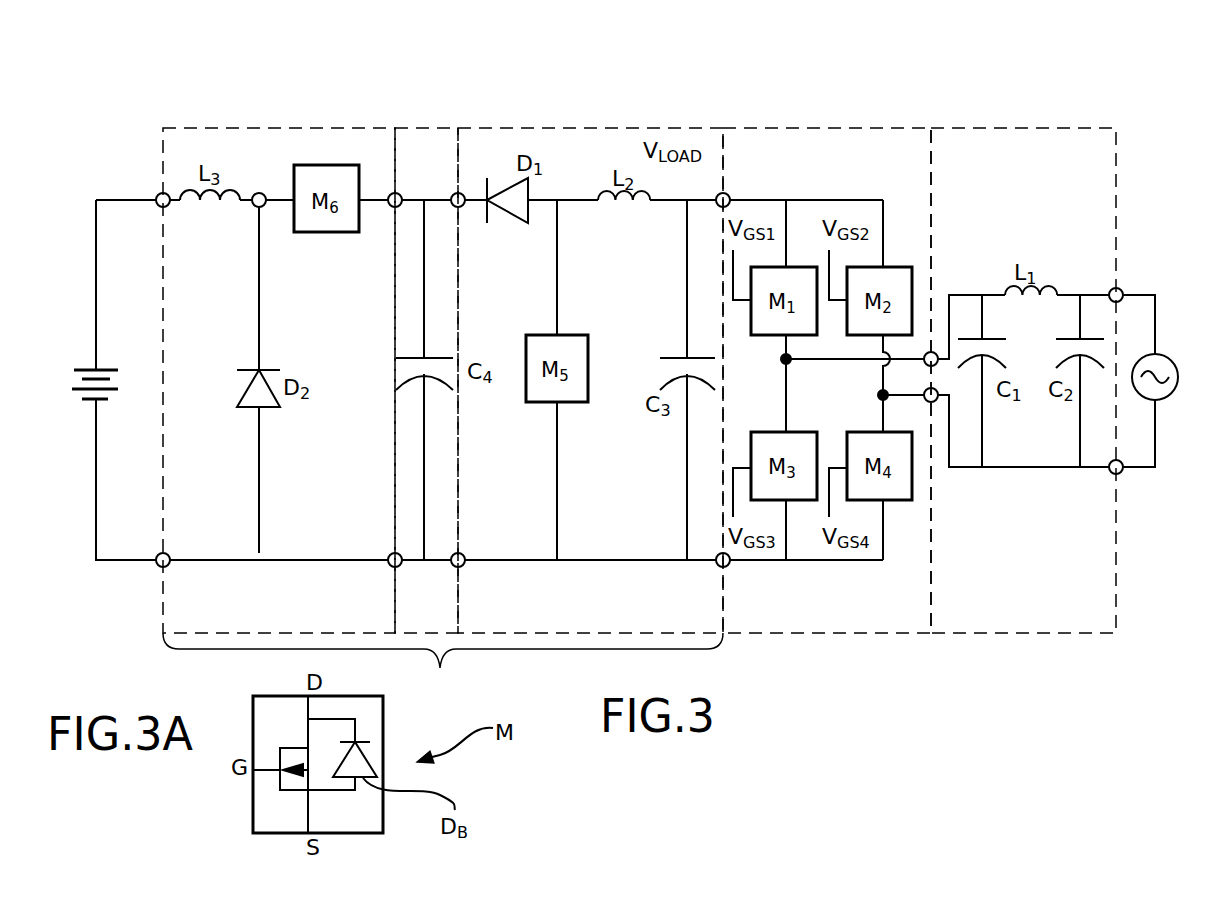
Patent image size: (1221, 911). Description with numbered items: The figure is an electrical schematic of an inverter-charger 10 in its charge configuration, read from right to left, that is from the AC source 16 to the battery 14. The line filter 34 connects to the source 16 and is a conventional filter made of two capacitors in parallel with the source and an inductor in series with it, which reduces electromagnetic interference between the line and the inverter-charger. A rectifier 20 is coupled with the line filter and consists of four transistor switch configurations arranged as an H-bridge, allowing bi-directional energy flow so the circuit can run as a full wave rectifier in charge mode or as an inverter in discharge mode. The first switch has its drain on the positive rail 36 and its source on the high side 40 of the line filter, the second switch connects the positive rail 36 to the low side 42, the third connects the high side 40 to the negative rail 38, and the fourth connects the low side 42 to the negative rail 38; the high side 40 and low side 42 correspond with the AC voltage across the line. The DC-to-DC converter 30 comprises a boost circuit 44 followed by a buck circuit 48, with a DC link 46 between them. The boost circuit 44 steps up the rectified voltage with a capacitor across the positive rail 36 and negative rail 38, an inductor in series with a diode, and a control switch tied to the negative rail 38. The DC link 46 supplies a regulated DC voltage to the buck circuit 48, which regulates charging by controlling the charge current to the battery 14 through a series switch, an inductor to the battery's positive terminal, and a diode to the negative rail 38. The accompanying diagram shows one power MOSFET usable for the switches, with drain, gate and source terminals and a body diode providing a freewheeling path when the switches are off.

The inverter-charger 10 is at (688, 90).
The battery 14 is at (51, 363).
The AC source 16 is at (1172, 393).
The rectifier 20 is at (885, 128).
The DC-to-DC converter 30 is at (443, 667).
The line filter 34 is at (1033, 668).
The positive rail 36 is at (873, 200).
The negative rail 38 is at (727, 566).
The high side 40 is at (933, 352).
The low side 42 is at (933, 402).
The boost circuit 44 is at (622, 128).
The DC link 46 is at (430, 128).
The buck circuit 48 is at (200, 128).